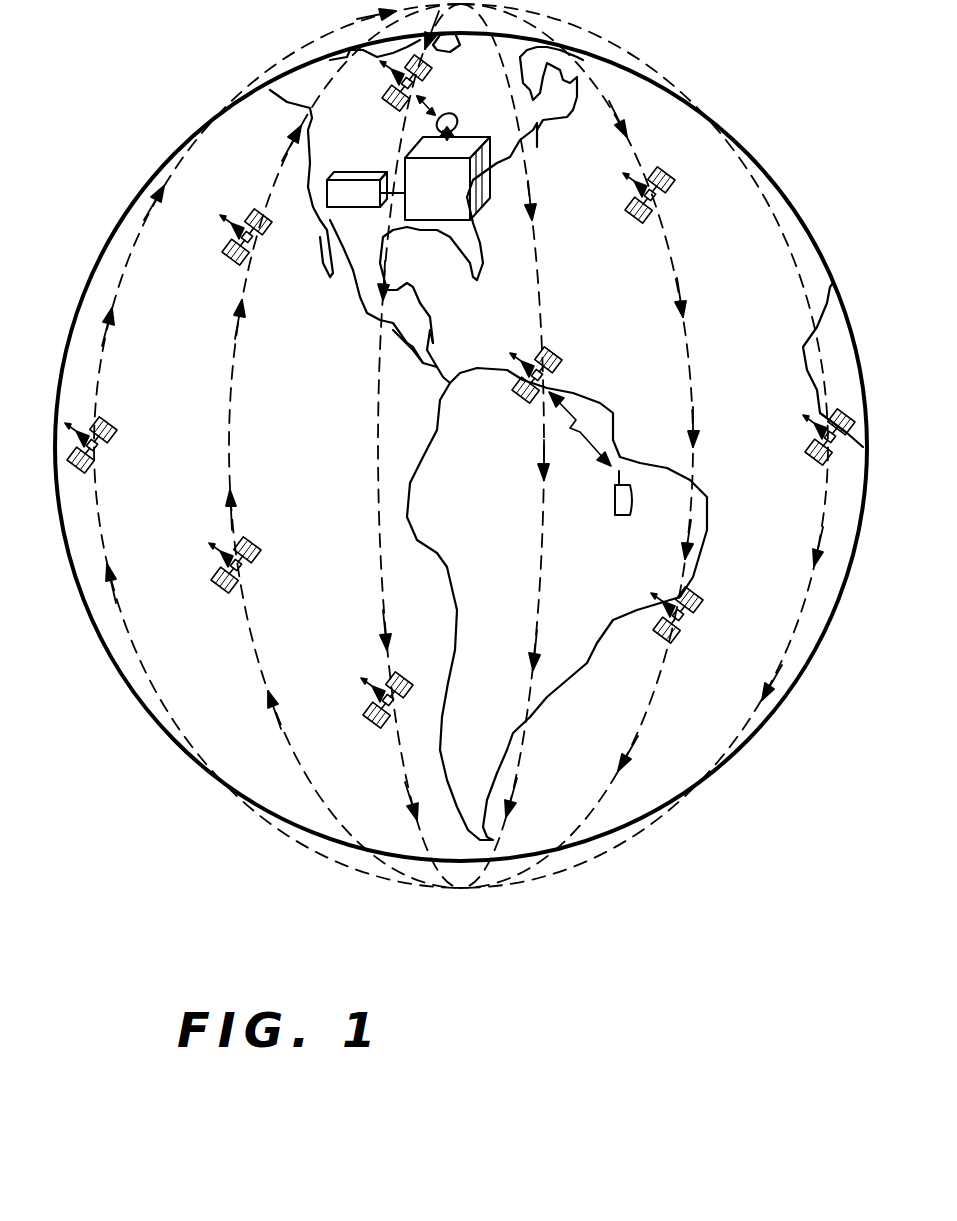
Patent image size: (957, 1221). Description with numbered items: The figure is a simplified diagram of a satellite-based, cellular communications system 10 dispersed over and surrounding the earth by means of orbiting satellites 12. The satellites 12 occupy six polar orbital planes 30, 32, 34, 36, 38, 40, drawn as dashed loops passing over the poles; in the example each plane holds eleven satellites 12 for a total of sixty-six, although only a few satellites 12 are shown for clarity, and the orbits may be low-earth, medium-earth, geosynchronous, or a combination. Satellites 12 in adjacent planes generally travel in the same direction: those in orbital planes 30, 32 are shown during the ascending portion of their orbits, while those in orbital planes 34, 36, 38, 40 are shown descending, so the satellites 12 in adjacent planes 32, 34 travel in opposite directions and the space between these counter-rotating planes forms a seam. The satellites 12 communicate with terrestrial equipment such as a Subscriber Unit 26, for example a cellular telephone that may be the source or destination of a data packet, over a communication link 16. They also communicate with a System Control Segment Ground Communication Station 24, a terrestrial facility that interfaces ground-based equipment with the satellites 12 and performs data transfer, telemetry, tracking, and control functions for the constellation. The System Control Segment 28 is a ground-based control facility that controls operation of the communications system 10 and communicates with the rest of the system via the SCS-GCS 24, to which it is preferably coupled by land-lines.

The satellite-based cellular communications system 10 is at (455, 975).
The satellite 12 is at (392, 104).
The communication link 16 is at (598, 398).
The System Control Segment Ground Communication Station 24 is at (473, 137).
The Subscriber Unit 26 is at (624, 516).
The System Control Segment 28 is at (345, 213).
The orbital plane 30 is at (104, 332).
The orbital plane 32 is at (232, 420).
The orbital plane 34 is at (372, 490).
The orbital plane 36 is at (545, 442).
The orbital plane 38 is at (693, 367).
The orbital plane 40 is at (825, 527).